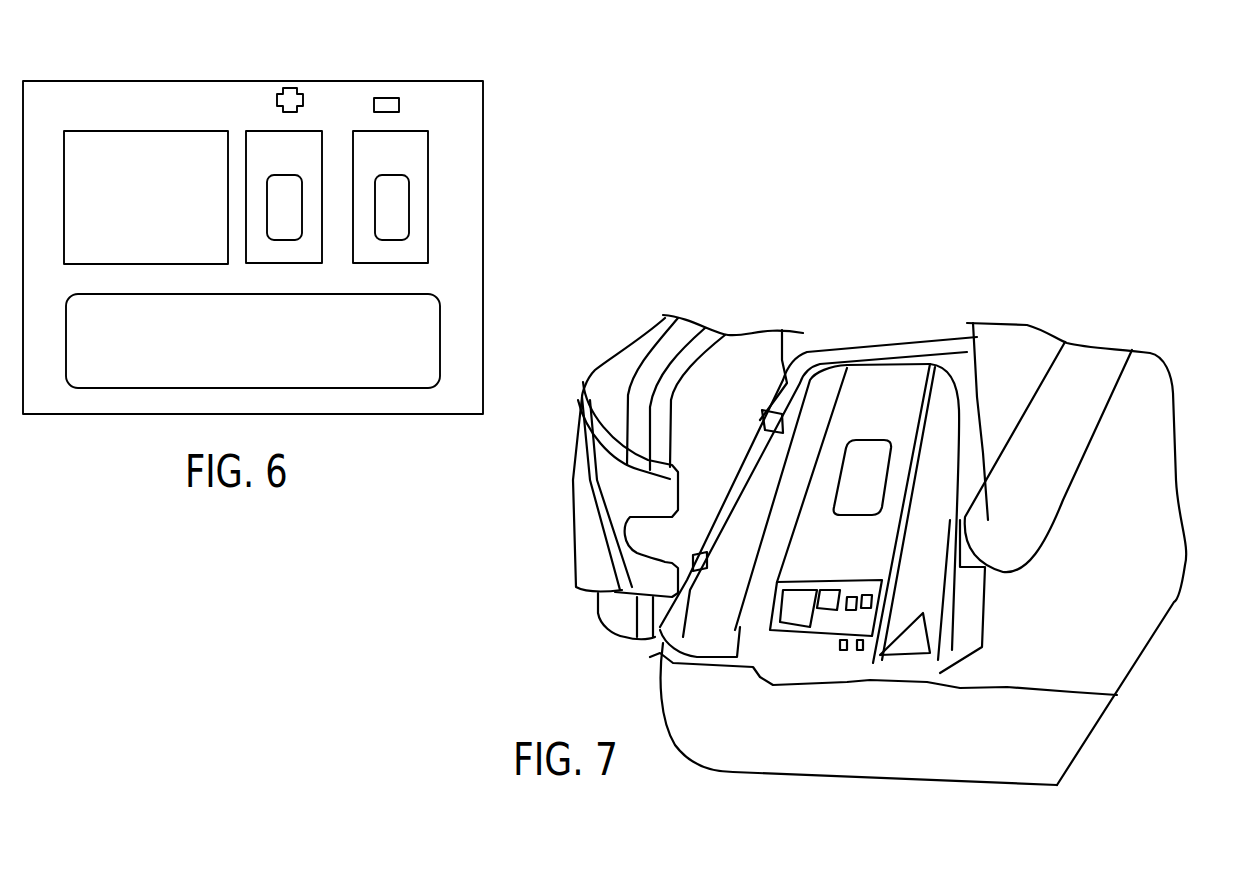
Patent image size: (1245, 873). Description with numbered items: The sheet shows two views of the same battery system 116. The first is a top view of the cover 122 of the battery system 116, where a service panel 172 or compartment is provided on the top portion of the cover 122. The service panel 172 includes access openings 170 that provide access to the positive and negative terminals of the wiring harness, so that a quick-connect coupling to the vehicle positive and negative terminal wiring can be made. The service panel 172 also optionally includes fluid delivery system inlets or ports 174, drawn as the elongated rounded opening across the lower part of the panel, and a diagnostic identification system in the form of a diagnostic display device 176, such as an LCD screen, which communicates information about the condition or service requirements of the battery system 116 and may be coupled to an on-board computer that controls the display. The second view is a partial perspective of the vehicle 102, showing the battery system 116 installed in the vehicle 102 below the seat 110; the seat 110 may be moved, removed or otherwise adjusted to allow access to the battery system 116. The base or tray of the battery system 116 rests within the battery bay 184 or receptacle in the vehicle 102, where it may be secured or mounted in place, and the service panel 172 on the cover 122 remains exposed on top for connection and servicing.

In FIG. 7, the vehicle 102 is at (1097, 667).
In FIG. 7, the seat 110 is at (615, 370).
In FIG. 7, the battery system 116 is at (880, 395).
In FIG. 7, the cover 122 is at (770, 578).
In FIG. 6, the access openings 170 is at (382, 143).
In FIG. 6, the service panel 172 is at (524, 132).
In FIG. 7, the service panel 172 is at (800, 613).
In FIG. 6, the fluid delivery system inlets 174 is at (415, 362).
In FIG. 6, the diagnostic display device 176 is at (108, 152).
In FIG. 7, the battery bay 184 is at (938, 645).